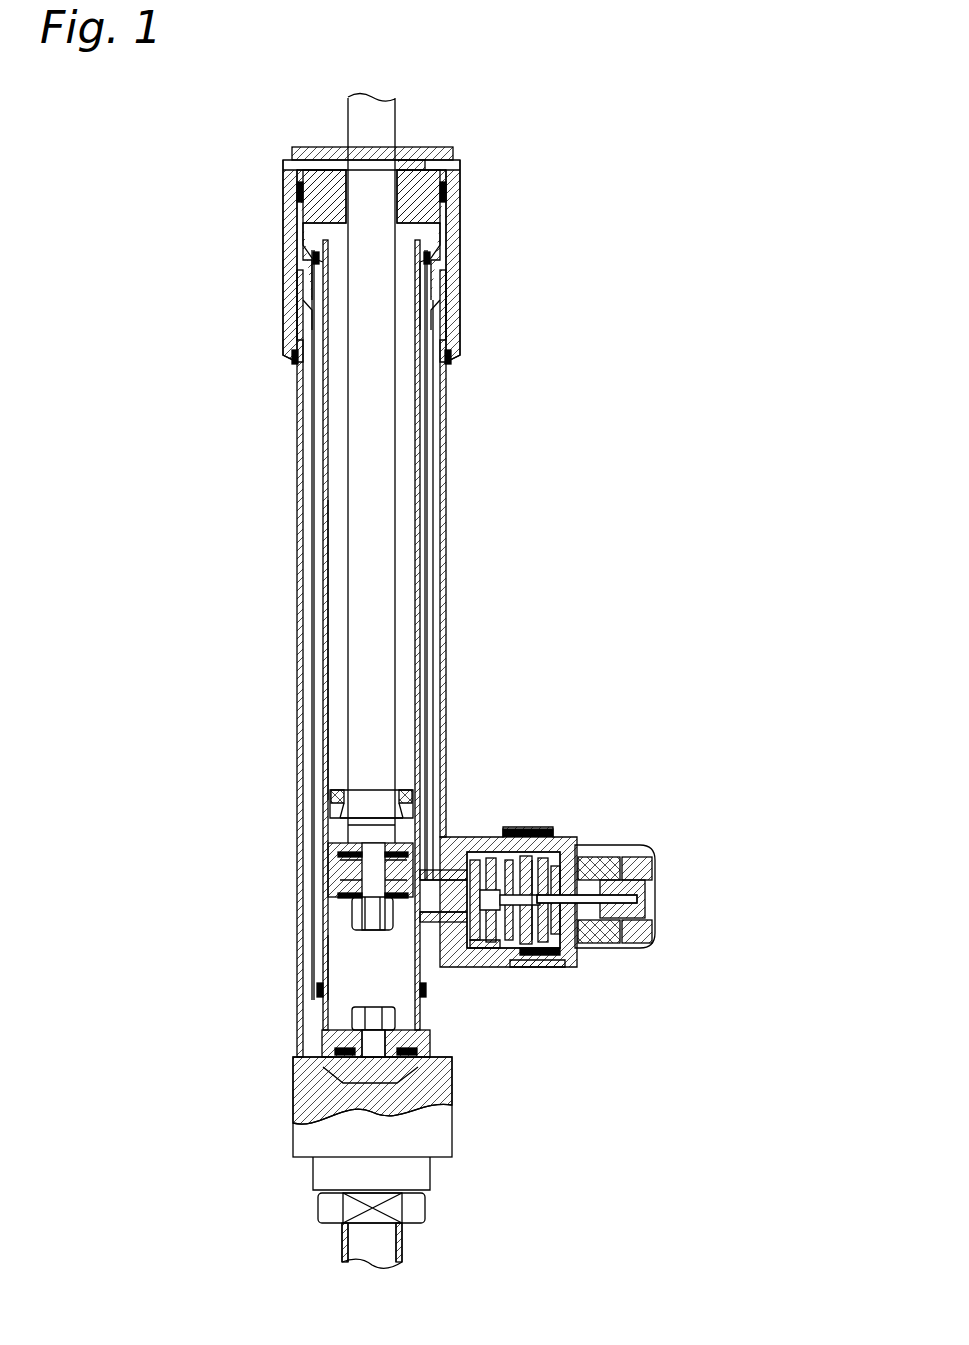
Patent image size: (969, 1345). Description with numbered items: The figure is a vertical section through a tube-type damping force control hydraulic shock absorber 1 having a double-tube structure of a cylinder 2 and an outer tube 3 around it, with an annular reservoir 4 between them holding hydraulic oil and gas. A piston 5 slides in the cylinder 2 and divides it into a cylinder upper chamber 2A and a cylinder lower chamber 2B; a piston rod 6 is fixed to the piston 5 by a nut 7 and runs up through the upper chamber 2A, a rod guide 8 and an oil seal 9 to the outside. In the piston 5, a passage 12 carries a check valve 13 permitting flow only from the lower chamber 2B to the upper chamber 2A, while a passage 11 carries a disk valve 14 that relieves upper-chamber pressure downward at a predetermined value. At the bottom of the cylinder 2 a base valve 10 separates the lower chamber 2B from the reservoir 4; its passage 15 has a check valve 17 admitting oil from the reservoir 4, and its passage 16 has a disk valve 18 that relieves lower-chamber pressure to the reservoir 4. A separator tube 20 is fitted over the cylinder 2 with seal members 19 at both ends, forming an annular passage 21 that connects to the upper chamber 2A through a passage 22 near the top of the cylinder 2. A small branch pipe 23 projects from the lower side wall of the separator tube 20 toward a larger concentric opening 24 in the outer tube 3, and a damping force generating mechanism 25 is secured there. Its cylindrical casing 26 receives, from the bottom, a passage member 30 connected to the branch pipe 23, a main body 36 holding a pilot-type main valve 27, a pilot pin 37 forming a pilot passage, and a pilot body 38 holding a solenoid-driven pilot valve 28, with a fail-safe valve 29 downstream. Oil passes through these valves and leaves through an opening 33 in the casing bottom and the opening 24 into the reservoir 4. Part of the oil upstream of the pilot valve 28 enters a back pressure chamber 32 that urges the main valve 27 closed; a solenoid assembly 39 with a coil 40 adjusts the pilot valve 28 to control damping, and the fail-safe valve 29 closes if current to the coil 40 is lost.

The shock absorber 1 is at (567, 134).
The cylinder 2 is at (432, 430).
The cylinder upper chamber 2A is at (335, 557).
The cylinder lower chamber 2B is at (330, 955).
The outer tube 3 is at (447, 497).
The reservoir 4 is at (300, 410).
The piston 5 is at (342, 882).
The piston rod 6 is at (358, 121).
The nut 7 is at (355, 920).
The rod guide 8 is at (300, 203).
The oil seal 9 is at (412, 150).
The base valve 10 is at (440, 1075).
The passage 11 is at (340, 862).
The passage 12 is at (422, 856).
The check valve 13 is at (402, 850).
The disk valve 14 is at (338, 905).
The passage 15 is at (305, 1062).
The passage 16 is at (440, 1090).
The check valve 17 is at (323, 1035).
The disk valve 18 is at (438, 1100).
The seal members 19 is at (315, 262).
The separator tube 20 is at (312, 495).
The annular passage 21 is at (430, 560).
The passage 22 is at (420, 322).
The branch pipe 23 is at (460, 880).
The opening 24 is at (446, 965).
The damping force generating mechanism 25 is at (606, 822).
The casing 26 is at (520, 845).
The main valve 27 is at (490, 965).
The pilot valve 28 is at (530, 970).
The fail-safe valve 29 is at (572, 968).
The passage member 30 is at (455, 950).
The back pressure chamber 32 is at (548, 835).
The opening 33 is at (492, 852).
The main body 36 is at (508, 968).
The pilot pin 37 is at (572, 843).
The pilot body 38 is at (535, 972).
The solenoid assembly 39 is at (622, 840).
The coil 40 is at (648, 873).